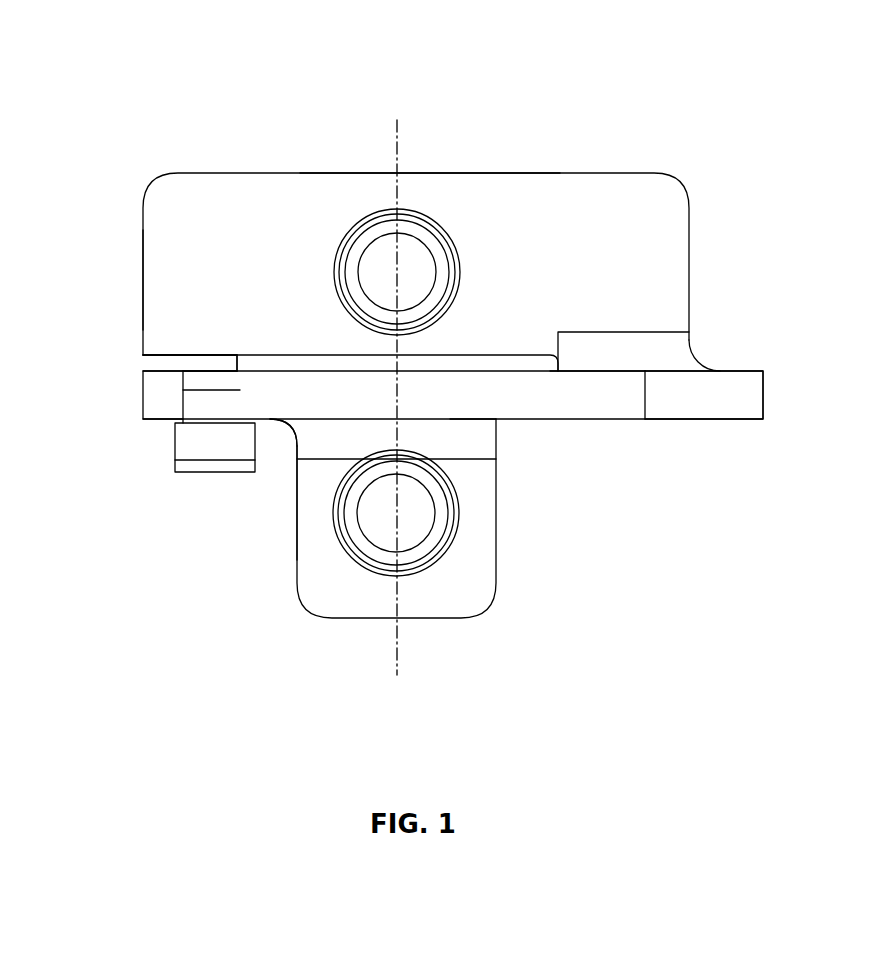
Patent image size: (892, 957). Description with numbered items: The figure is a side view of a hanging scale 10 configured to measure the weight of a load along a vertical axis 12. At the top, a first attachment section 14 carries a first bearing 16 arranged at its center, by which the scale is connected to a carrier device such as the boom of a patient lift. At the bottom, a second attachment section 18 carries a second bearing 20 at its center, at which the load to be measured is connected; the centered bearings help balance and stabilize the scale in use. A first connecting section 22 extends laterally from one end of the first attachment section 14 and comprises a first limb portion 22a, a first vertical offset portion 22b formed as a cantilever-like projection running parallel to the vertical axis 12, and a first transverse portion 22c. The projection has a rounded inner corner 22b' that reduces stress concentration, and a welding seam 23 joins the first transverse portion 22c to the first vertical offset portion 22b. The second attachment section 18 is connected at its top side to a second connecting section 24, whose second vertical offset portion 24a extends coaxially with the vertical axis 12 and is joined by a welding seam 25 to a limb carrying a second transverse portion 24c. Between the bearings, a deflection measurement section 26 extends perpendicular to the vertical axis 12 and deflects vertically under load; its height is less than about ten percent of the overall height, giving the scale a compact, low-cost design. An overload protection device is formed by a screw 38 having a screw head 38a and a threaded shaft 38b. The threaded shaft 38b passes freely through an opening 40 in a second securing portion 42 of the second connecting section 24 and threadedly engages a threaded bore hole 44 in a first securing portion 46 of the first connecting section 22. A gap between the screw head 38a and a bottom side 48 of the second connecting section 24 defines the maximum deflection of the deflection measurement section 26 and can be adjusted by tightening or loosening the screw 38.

The hanging scale 10 is at (657, 65).
The vertical axis 12 is at (398, 132).
The first attachment section 14 is at (436, 194).
The first bearing 16 is at (377, 250).
The second attachment section 18 is at (476, 558).
The second bearing 20 is at (410, 533).
The first connecting section 22 is at (632, 248).
The first limb portion 22a is at (533, 218).
The first vertical offset portion 22b is at (669, 302).
The rounded inner corner 22b' is at (594, 420).
The first transverse portion 22c is at (727, 400).
The welding seam 23 is at (695, 352).
The second connecting section 24 is at (470, 438).
The second vertical offset portion 24a is at (336, 440).
The second transverse portion 24c is at (208, 395).
The welding seam 25 is at (293, 440).
The deflection measurement section 26 is at (482, 395).
The screw 38 is at (235, 497).
The screw head 38a is at (195, 460).
The threaded shaft 38b is at (207, 363).
The opening 40 is at (202, 430).
The second securing portion 42 is at (233, 388).
The threaded bore hole 44 is at (194, 362).
The first securing portion 46 is at (202, 313).
The bottom side 48 is at (158, 430).